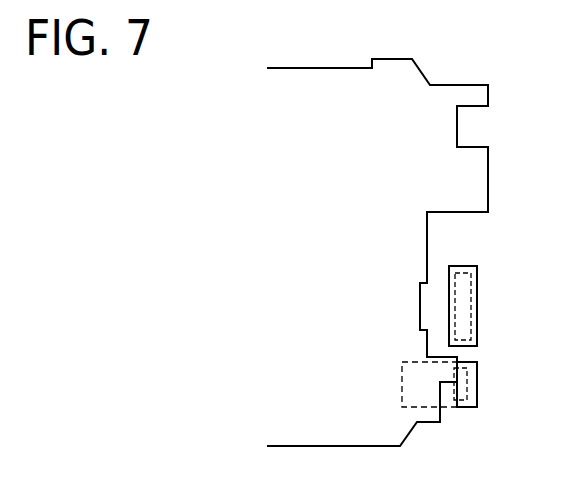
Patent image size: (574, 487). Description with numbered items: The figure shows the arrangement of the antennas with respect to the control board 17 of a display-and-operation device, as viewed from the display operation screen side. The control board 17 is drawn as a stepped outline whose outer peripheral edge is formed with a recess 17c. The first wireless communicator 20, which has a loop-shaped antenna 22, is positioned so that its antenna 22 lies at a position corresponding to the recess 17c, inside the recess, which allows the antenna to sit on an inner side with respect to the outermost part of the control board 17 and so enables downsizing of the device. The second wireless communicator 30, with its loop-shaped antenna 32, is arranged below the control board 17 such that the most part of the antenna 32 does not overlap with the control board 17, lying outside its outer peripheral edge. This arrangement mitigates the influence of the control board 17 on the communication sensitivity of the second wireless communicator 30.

The control board 17 is at (392, 58).
The recess 17c is at (429, 240).
The first wireless communicator 20 is at (478, 289).
The antenna 22 is at (475, 312).
The second wireless communicator 30 is at (460, 408).
The antenna 32 is at (468, 380).